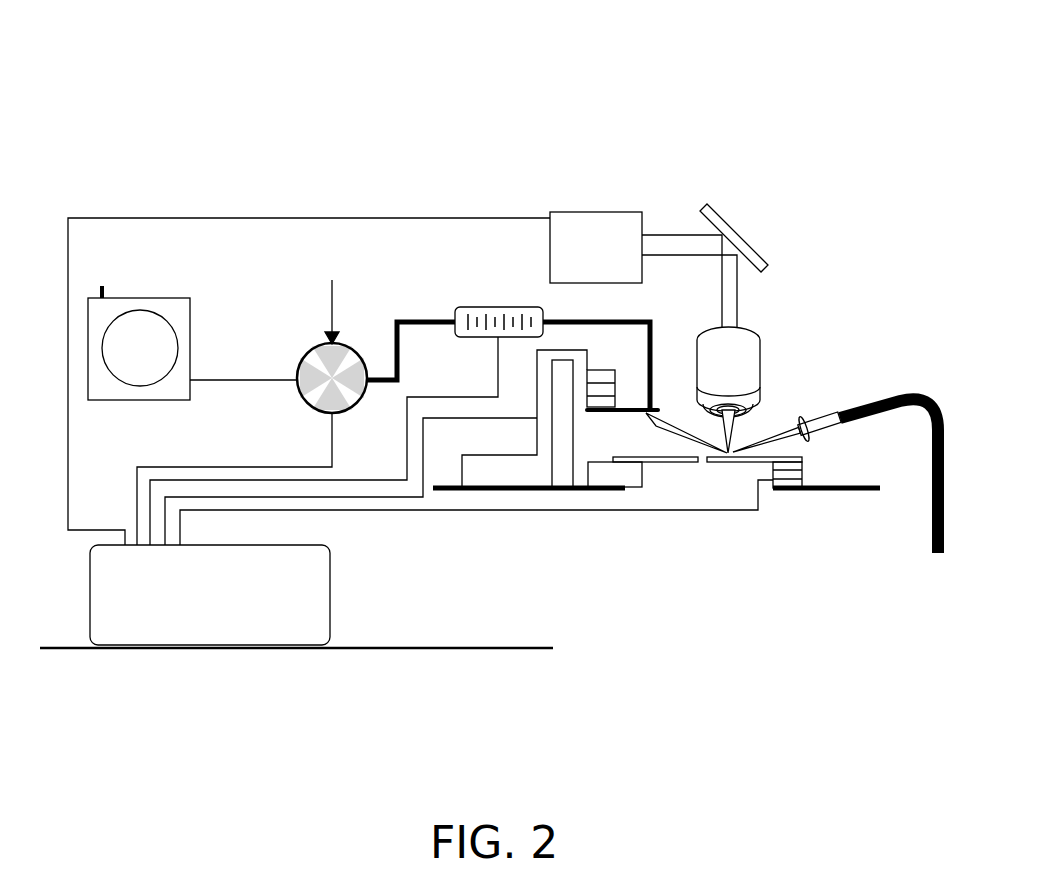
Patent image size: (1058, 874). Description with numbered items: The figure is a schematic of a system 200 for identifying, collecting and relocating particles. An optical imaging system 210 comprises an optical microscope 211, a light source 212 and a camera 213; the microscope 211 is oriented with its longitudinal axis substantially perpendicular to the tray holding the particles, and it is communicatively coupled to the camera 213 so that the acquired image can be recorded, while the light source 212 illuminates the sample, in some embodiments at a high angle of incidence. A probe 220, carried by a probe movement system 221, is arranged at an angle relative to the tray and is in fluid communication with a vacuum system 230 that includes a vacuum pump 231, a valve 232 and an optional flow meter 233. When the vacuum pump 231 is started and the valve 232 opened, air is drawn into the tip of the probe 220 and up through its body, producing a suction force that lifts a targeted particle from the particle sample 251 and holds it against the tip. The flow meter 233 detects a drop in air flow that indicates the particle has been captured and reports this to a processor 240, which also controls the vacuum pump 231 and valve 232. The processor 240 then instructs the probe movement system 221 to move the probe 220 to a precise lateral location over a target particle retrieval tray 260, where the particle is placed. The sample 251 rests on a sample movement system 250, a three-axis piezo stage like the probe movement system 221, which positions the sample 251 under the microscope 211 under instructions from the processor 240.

The system 200 is at (597, 58).
The optical imaging system 210 is at (960, 135).
The optical microscope 211 is at (778, 407).
The light source 212 is at (907, 397).
The camera 213 is at (605, 253).
The probe 220 is at (682, 437).
The probe movement system 221 is at (523, 475).
The vacuum system 230 is at (415, 130).
The vacuum pump 231 is at (173, 298).
The valve 232 is at (315, 358).
The flow meter 233 is at (478, 307).
The processor 240 is at (218, 618).
The sample movement system 250 is at (785, 477).
The particle sample 251 is at (728, 455).
The target particle retrieval tray 260 is at (683, 462).